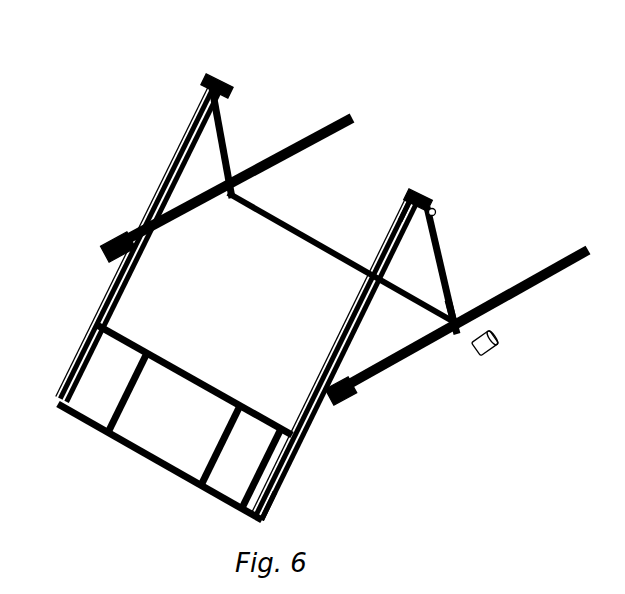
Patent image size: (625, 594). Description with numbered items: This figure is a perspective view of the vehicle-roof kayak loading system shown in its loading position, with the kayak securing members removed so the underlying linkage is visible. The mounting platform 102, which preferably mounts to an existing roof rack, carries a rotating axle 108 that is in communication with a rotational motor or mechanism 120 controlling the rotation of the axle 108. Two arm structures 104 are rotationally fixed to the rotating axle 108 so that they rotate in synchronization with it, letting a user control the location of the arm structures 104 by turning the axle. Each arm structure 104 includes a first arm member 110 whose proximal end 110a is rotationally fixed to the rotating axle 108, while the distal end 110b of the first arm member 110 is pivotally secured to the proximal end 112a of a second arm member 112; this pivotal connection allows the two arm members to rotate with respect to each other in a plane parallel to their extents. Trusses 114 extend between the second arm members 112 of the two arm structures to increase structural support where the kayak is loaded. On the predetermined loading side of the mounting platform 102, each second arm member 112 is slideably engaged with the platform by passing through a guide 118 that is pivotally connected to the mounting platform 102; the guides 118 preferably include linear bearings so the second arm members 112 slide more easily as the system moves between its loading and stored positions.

The mounting platform 102 is at (350, 112).
The arm structure 104 is at (183, 54).
The rotating axle 108 is at (288, 232).
The first arm member 110 is at (229, 152).
The proximal end 110a is at (455, 330).
The distal end 110b is at (436, 218).
The second arm member 112 is at (158, 196).
The proximal end 112a is at (403, 212).
The truss 114 is at (135, 407).
The guide 118 is at (106, 271).
The rotational motor or mechanism 120 is at (494, 356).